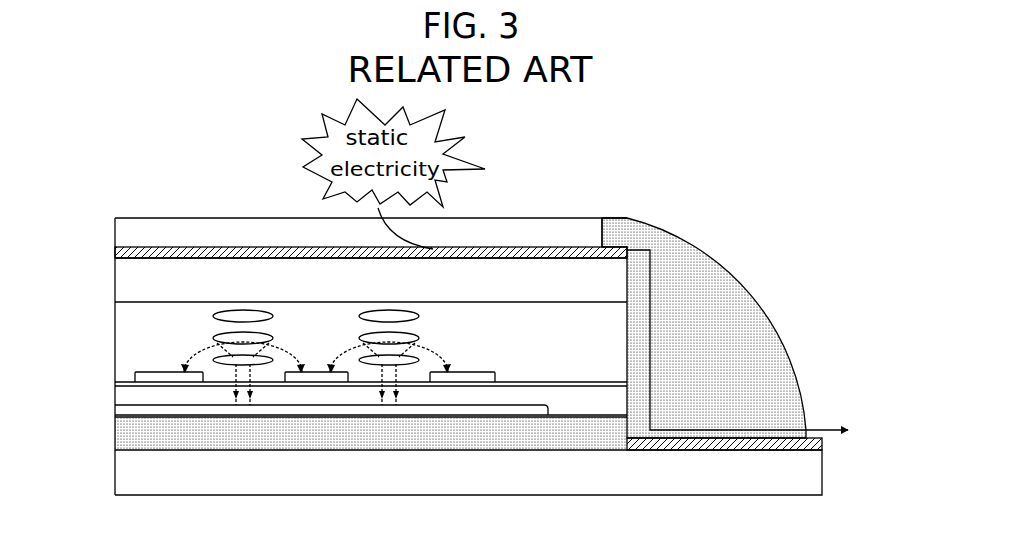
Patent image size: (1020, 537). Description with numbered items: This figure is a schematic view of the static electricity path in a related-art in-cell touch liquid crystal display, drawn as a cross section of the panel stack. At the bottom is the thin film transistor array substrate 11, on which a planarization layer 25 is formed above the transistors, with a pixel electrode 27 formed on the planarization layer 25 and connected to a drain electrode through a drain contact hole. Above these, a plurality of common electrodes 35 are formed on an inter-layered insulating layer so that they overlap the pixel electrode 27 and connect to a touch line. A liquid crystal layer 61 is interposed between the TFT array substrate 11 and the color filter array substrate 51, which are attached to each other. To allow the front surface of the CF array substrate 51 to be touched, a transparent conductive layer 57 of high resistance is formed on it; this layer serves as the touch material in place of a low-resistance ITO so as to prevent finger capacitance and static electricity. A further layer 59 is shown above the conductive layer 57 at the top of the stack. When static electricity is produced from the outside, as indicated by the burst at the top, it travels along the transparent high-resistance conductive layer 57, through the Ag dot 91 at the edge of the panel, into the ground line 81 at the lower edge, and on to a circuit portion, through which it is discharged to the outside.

The thin film transistor array substrate 11 is at (114, 473).
The planarization layer 25 is at (114, 438).
The pixel electrode 27 is at (114, 411).
The common electrodes 35 is at (114, 376).
The liquid crystal layer 61 is at (116, 343).
The color filter array substrate 51 is at (114, 280).
The transparent conductive layer 57 is at (122, 251).
The upper layer 59 is at (113, 231).
The Ag dot 91 is at (773, 323).
The ground line 81 is at (822, 446).